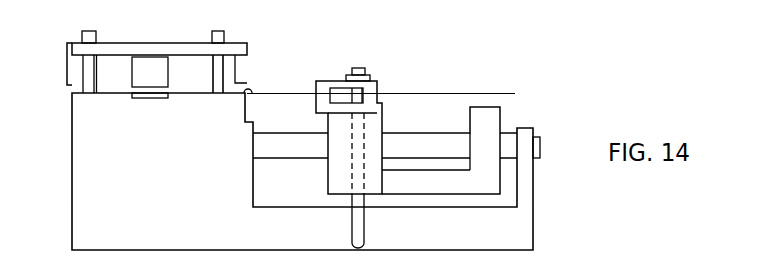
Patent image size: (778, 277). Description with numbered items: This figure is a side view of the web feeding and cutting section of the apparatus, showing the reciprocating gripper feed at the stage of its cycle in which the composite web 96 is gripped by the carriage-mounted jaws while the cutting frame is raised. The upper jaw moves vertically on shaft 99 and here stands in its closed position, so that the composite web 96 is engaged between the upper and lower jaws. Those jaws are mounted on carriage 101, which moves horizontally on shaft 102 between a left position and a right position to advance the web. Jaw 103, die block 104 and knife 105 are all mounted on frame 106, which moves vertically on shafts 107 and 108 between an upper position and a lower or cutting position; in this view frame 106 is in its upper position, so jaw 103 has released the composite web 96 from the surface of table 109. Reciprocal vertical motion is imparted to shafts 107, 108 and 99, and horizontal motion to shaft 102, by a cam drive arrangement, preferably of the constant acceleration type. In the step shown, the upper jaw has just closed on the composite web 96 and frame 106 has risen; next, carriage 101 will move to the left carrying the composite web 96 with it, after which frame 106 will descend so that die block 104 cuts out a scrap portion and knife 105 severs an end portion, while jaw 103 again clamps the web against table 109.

The composite web 96 is at (456, 96).
The shaft 99 is at (370, 92).
The carriage 101 is at (328, 173).
The shaft 102 is at (440, 133).
The jaw 103 is at (248, 87).
The die block 104 is at (167, 73).
The knife 105 is at (69, 71).
The frame 106 is at (147, 50).
The shaft 107 is at (94, 37).
The shaft 108 is at (222, 38).
The table 109 is at (251, 97).